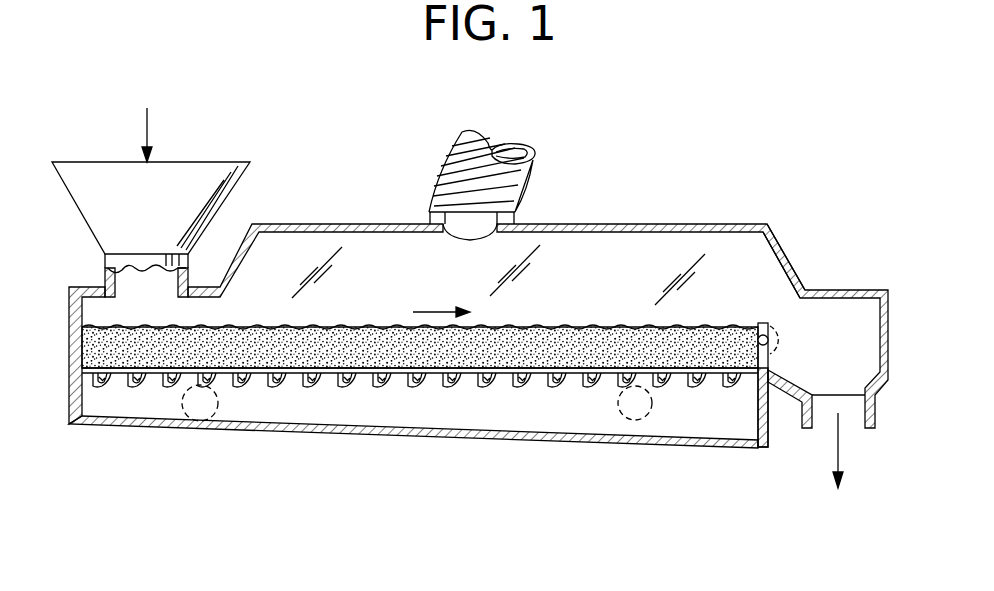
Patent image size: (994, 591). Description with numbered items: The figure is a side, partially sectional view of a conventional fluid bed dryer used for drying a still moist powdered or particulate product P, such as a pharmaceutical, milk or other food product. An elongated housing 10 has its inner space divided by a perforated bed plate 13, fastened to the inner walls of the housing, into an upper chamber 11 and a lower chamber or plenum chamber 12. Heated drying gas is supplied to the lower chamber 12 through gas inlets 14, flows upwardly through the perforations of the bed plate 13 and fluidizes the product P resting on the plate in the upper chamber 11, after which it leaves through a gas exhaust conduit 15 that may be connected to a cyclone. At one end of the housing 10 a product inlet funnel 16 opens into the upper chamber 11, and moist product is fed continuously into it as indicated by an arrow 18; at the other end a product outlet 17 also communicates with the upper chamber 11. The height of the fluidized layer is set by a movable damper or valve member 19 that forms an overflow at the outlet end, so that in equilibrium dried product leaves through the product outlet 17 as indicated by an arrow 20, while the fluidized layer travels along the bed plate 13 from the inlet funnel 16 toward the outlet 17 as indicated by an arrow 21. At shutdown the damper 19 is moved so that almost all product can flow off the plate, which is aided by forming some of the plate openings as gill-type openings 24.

The housing 10 is at (357, 224).
The upper chamber 11 is at (773, 283).
The lower chamber 12 is at (708, 418).
The perforated bed plate 13 is at (468, 376).
The gas inlets 14 is at (212, 420).
The gas exhaust conduit 15 is at (468, 136).
The product inlet funnel 16 is at (208, 176).
The product outlet 17 is at (803, 412).
The arrow 18 is at (148, 122).
The damper or valve member 19 is at (778, 338).
The arrow 20 is at (844, 442).
The arrow 21 is at (430, 308).
The gill-type openings 24 is at (566, 378).
The powdered or particulate product P is at (597, 327).